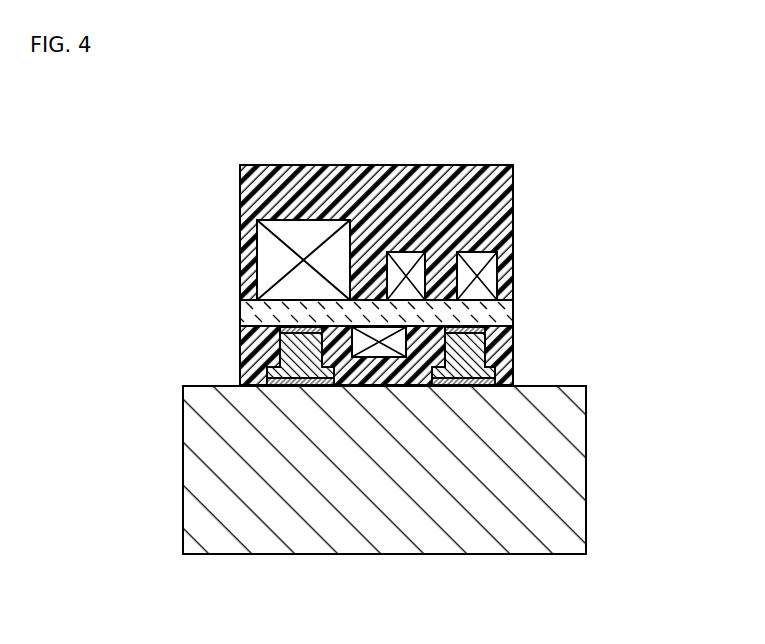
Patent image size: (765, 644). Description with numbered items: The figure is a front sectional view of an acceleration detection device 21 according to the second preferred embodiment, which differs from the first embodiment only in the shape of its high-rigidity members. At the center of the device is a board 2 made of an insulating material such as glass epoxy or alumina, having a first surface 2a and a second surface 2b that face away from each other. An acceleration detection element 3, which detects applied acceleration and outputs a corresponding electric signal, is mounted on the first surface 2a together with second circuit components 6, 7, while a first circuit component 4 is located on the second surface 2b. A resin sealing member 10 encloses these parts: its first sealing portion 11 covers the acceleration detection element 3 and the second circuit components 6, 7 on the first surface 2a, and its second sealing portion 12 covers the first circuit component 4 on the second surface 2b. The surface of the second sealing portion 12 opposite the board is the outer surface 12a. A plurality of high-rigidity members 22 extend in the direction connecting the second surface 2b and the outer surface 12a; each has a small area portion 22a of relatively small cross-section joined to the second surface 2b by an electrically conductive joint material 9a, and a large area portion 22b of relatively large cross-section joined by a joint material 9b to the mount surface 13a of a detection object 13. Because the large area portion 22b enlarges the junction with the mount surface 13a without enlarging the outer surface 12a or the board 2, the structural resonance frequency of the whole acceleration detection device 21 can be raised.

The acceleration detection device 21 is at (258, 160).
The sealing member 10 is at (627, 148).
The first sealing portion 11 is at (513, 213).
The second sealing portion 12 is at (513, 340).
The outer surface 12a is at (342, 387).
The acceleration detection element 3 is at (305, 220).
The second circuit component 6 is at (404, 252).
The second circuit component 7 is at (475, 252).
The electrically conductive joint material 9a is at (308, 326).
The joint material 9b is at (295, 387).
The board 2 is at (235, 299).
The first surface 2a is at (302, 300).
The second surface 2b is at (255, 324).
The first circuit component 4 is at (377, 357).
The high-rigidity member 22 is at (85, 307).
The small area portion 22a is at (280, 345).
The large area portion 22b is at (268, 372).
The detection object 13 is at (592, 476).
The mount surface 13a is at (563, 387).